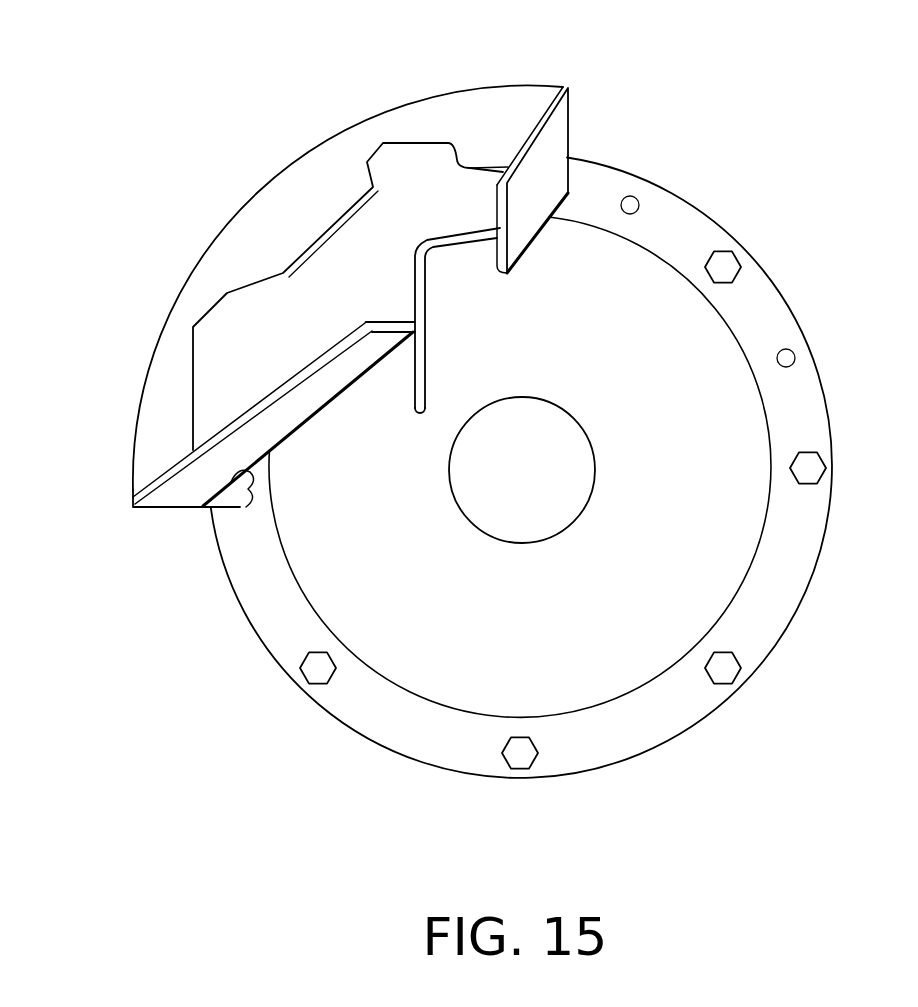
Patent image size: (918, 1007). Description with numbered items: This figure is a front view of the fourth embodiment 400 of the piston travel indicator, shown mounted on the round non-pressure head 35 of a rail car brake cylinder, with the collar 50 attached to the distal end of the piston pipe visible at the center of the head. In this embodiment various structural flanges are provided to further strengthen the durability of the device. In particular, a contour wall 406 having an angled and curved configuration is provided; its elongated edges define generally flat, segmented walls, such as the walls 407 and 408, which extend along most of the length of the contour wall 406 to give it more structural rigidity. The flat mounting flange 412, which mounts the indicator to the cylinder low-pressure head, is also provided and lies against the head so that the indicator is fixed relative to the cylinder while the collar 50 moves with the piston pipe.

The non-pressure head 35 is at (682, 240).
The collar 50 is at (587, 505).
The fourth embodiment of the piston travel indicator 400 is at (248, 104).
The contour wall 406 is at (415, 160).
The segmented wall 407 is at (557, 137).
The segmented wall 408 is at (177, 492).
The flat mounting flange 412 is at (170, 372).